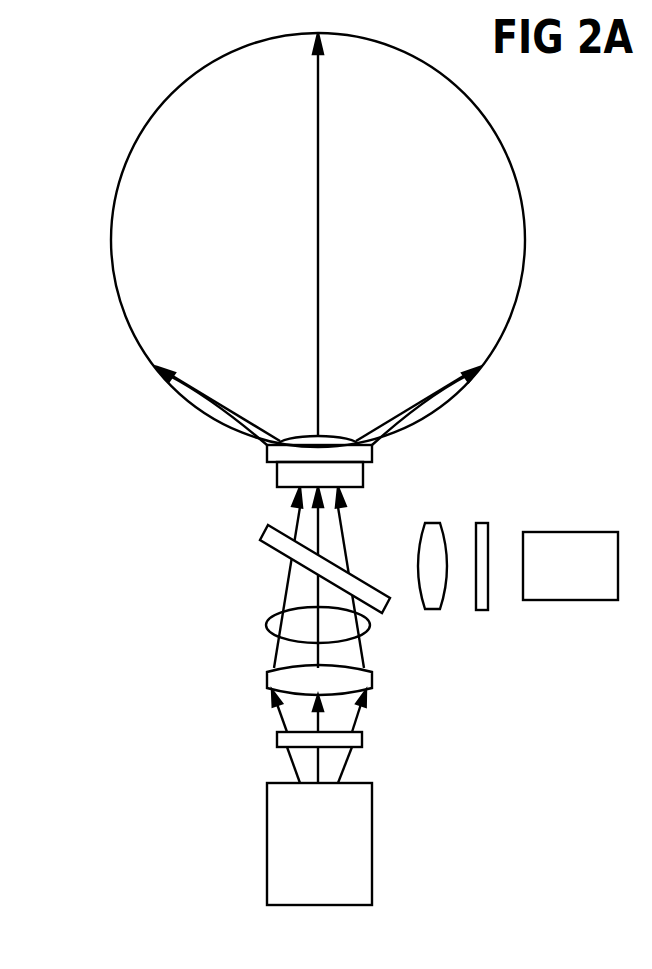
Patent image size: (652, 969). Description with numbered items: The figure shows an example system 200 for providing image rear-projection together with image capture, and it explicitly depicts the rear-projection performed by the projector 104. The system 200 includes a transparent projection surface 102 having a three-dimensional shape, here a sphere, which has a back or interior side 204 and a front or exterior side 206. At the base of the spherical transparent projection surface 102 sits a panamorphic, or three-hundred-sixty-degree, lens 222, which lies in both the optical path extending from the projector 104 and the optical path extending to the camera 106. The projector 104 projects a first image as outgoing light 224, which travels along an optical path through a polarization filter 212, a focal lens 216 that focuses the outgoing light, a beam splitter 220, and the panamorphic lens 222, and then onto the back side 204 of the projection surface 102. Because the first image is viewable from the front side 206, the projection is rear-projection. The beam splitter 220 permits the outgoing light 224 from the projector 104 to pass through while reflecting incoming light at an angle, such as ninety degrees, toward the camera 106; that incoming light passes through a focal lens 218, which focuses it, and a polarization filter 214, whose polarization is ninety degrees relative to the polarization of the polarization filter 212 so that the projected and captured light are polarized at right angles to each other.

The system 200 is at (477, 759).
The transparent projection surface 102 is at (121, 316).
The projector 104 is at (267, 829).
The camera 106 is at (525, 600).
The back side 204 is at (170, 124).
The front side 206 is at (140, 114).
The polarization filter 212 is at (277, 739).
The polarization filter 214 is at (484, 523).
The focal lens 216 is at (267, 680).
The focal lens 218 is at (432, 609).
The beam splitter 220 is at (268, 532).
The panamorphic lens 222 is at (277, 476).
The outgoing light 224 is at (268, 622).